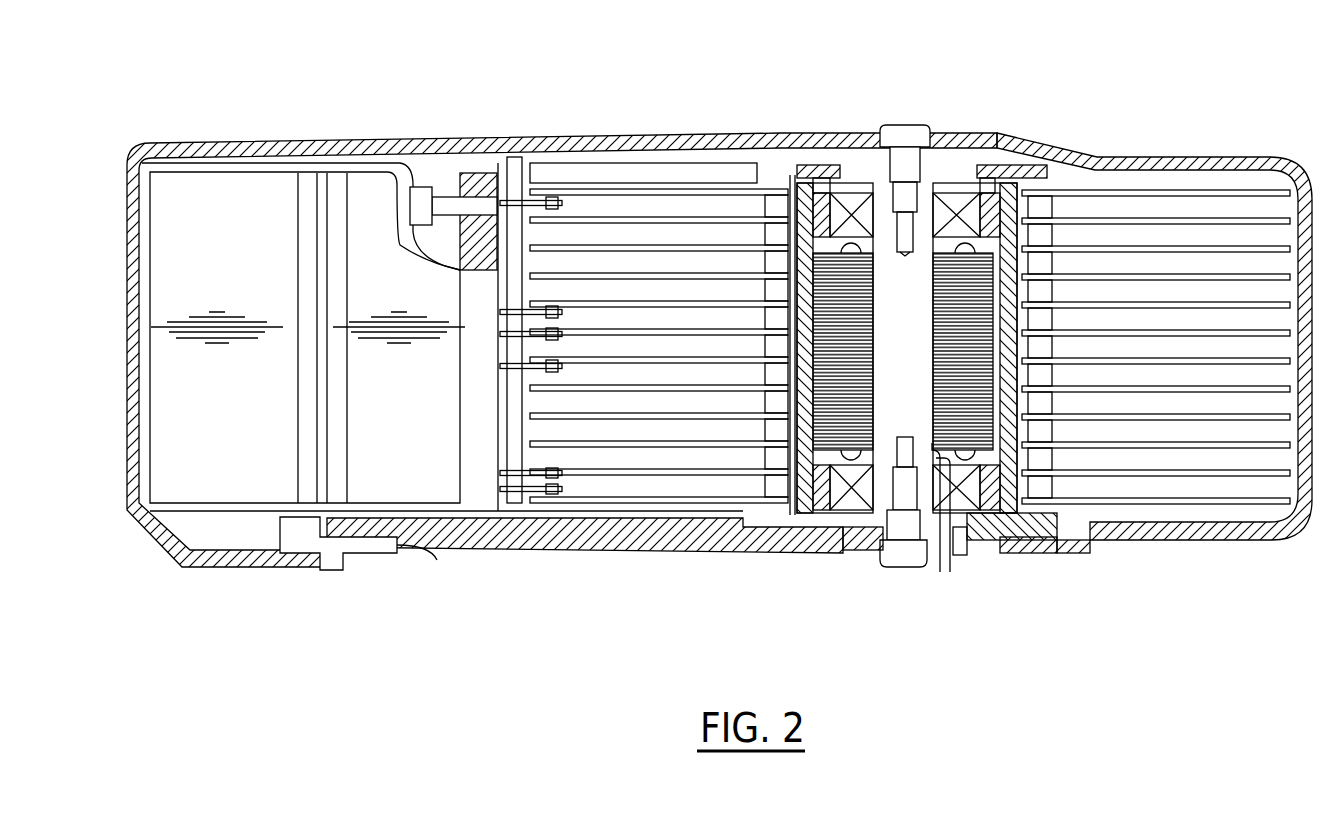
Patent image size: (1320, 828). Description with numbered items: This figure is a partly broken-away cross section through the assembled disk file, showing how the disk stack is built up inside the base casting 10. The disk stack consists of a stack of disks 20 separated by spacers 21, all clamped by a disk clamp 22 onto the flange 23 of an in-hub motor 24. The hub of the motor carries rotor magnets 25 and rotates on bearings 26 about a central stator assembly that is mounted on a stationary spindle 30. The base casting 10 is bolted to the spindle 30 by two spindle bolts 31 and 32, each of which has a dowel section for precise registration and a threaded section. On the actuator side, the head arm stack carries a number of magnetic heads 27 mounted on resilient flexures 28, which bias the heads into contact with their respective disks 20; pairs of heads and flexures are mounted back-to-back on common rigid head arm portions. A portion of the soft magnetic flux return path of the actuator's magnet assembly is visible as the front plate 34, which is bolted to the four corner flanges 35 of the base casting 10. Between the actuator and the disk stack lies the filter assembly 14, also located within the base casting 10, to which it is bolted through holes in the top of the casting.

The base casting 10 is at (532, 548).
The filter assembly 14 is at (683, 162).
The disks 20 is at (1217, 217).
The spacers 21 is at (1053, 262).
The disk clamp 22 is at (797, 165).
The flange 23 is at (1072, 560).
The in-hub motor 24 is at (1010, 555).
The rotor magnets 25 is at (1020, 248).
The bearings 26 is at (965, 185).
The magnetic heads 27 is at (565, 200).
The resilient flexures 28 is at (528, 163).
The stationary spindle 30 is at (883, 483).
The spindle bolt 31 is at (910, 127).
The spindle bolt 32 is at (908, 567).
The front plate 34 is at (480, 507).
The corner flanges 35 is at (408, 187).